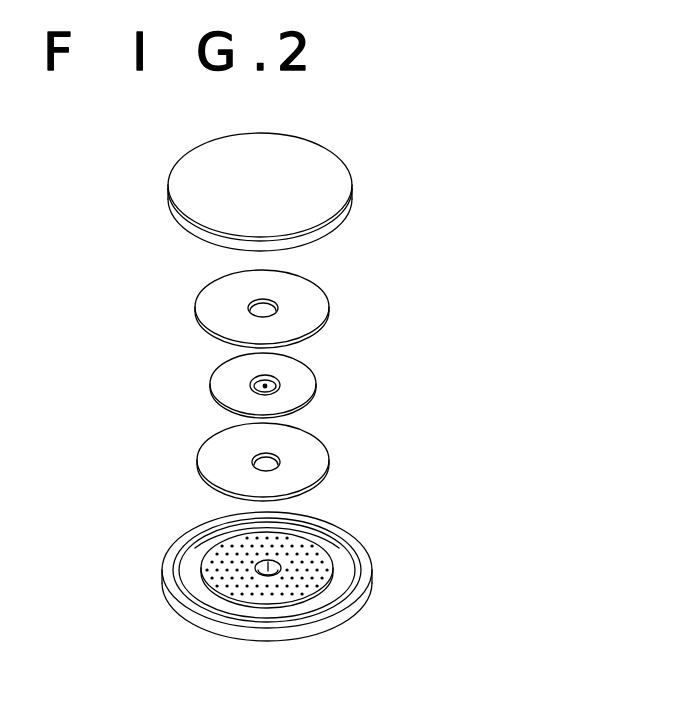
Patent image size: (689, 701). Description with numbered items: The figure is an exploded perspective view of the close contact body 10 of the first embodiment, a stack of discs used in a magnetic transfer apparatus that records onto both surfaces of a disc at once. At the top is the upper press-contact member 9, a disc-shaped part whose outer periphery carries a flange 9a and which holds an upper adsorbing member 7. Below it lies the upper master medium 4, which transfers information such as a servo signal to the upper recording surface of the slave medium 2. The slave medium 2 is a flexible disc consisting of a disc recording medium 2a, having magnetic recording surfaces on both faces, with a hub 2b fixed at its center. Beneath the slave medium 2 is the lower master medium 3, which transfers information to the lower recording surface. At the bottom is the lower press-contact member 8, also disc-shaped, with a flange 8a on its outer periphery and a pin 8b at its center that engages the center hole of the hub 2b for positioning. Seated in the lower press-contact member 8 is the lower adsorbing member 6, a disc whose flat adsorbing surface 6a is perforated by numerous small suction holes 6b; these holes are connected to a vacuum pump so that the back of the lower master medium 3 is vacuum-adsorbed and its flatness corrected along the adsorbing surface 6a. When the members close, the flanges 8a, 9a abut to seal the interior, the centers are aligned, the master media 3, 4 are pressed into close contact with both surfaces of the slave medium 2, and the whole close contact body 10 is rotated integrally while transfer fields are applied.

The close contact body 10 is at (115, 143).
The upper press-contact member 9 is at (322, 162).
The flange 9a is at (182, 226).
The upper adsorbing member 7 is at (338, 227).
The upper master medium 4 is at (315, 300).
The slave medium 2 is at (307, 380).
The disc recording medium 2a is at (223, 377).
The hub 2b is at (258, 384).
The lower master medium 3 is at (322, 460).
The lower press-contact member 8 is at (368, 587).
The flange 8a is at (190, 605).
The pin 8b is at (280, 574).
The lower adsorbing member 6 is at (327, 550).
The adsorbing surface 6a is at (210, 550).
The suction holes 6b is at (218, 569).